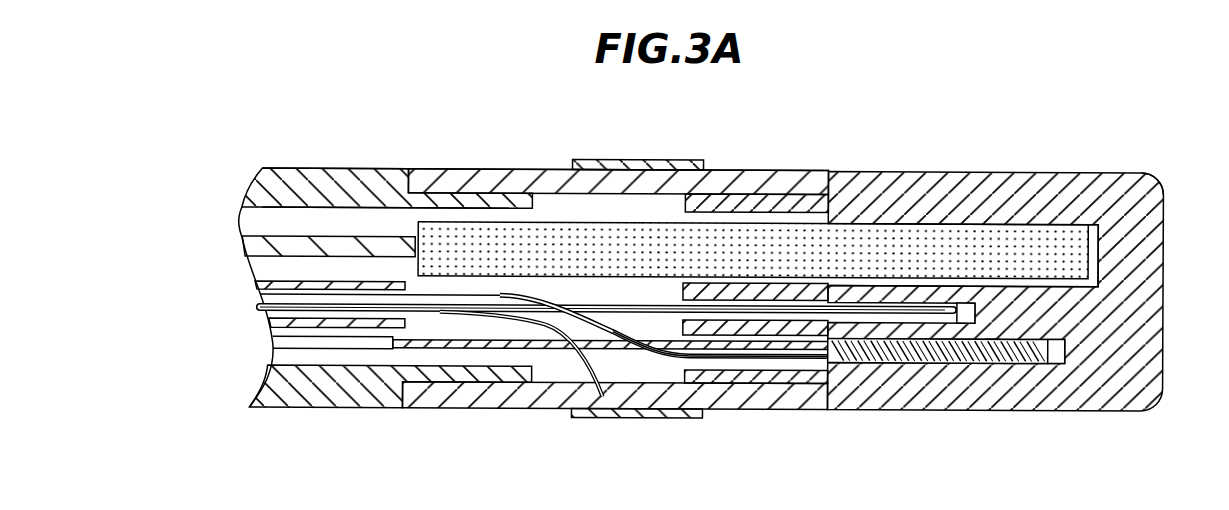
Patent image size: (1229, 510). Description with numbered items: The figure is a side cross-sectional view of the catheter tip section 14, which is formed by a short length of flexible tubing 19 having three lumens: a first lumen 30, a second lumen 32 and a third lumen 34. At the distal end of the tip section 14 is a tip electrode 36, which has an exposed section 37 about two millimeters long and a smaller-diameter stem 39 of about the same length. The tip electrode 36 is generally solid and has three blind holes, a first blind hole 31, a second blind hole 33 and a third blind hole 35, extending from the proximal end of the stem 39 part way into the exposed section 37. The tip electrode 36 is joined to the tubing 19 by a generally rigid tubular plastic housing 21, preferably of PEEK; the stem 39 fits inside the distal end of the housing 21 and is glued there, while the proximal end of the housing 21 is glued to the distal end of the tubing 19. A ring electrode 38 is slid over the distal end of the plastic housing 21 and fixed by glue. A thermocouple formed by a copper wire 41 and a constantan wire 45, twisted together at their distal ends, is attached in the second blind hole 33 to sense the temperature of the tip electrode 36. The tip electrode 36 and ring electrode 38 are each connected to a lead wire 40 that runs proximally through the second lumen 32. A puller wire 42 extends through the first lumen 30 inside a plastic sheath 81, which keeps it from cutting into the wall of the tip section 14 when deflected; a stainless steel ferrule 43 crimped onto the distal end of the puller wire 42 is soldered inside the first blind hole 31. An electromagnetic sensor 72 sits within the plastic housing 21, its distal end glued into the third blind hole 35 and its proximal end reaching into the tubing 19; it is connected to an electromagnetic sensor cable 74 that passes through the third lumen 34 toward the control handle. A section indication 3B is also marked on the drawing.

The tip section 14 is at (436, 118).
The flexible tubing 19 is at (256, 187).
The plastic housing 21 is at (489, 178).
The first lumen 30 is at (278, 333).
The first blind hole 31 is at (1063, 353).
The second lumen 32 is at (267, 301).
The second blind hole 33 is at (963, 300).
The third lumen 34 is at (250, 232).
The third blind hole 35 is at (1097, 238).
The tip electrode 36 is at (1108, 204).
The exposed section 37 is at (1135, 214).
The ring electrode 38 is at (640, 163).
The stem 39 is at (808, 202).
The lead wire 40 is at (582, 362).
The copper wire 41 is at (695, 358).
The puller wire 42 is at (638, 338).
The ferrule 43 is at (927, 343).
The constantan wire 45 is at (783, 313).
The electromagnetic sensor 72 is at (763, 237).
The electromagnetic sensor cable 74 is at (368, 240).
The sheath 81 is at (275, 343).
The section view 3B indicator 3B is at (993, 357).